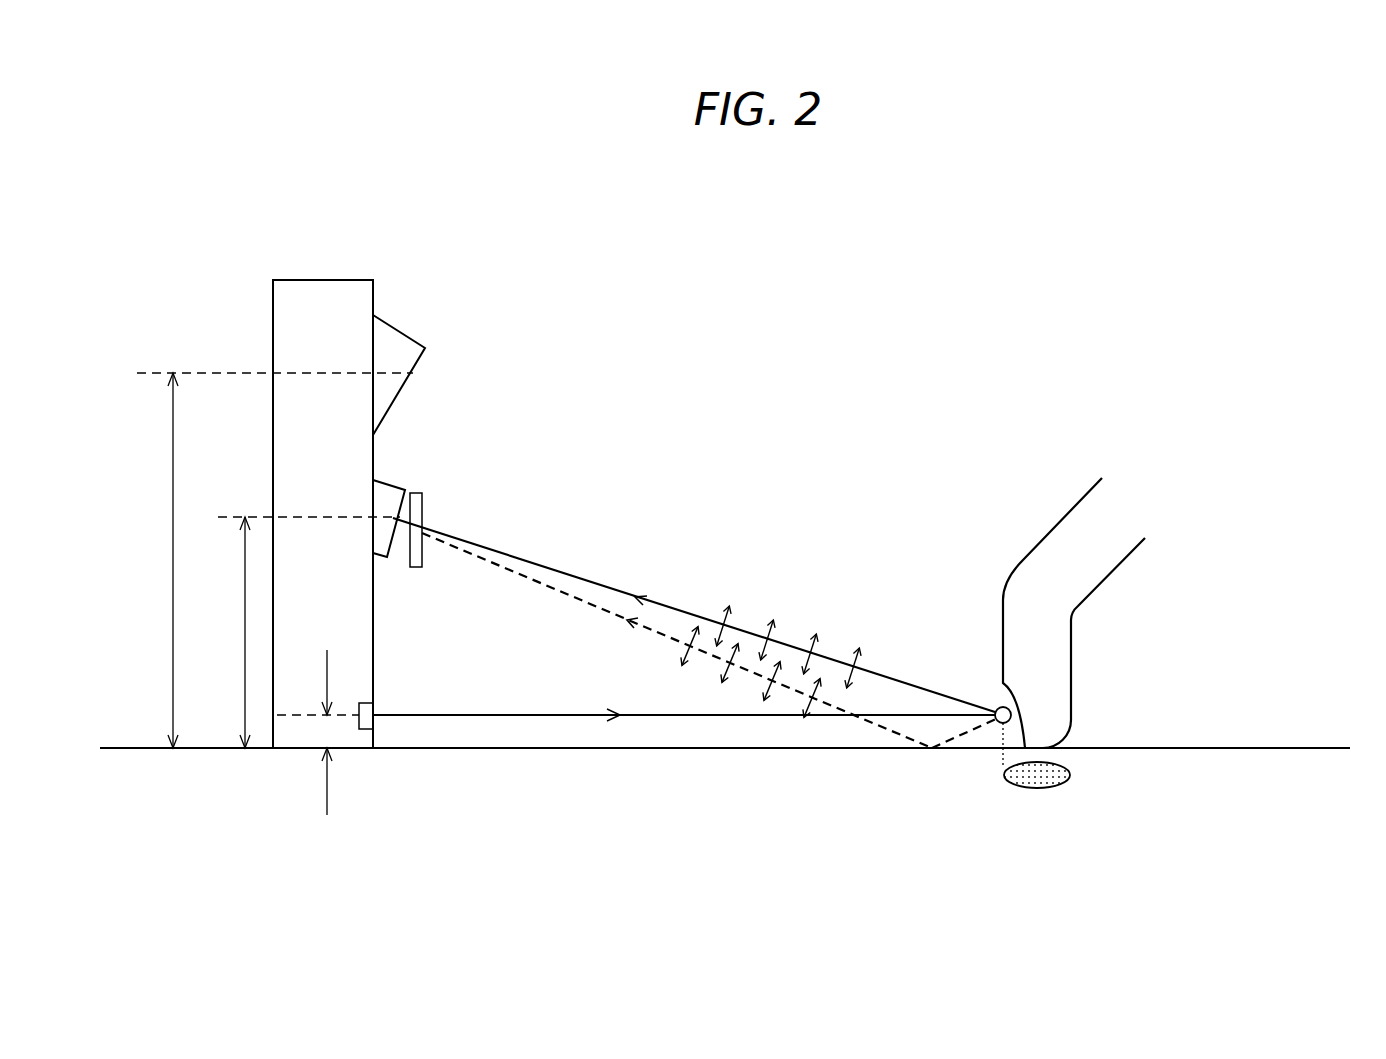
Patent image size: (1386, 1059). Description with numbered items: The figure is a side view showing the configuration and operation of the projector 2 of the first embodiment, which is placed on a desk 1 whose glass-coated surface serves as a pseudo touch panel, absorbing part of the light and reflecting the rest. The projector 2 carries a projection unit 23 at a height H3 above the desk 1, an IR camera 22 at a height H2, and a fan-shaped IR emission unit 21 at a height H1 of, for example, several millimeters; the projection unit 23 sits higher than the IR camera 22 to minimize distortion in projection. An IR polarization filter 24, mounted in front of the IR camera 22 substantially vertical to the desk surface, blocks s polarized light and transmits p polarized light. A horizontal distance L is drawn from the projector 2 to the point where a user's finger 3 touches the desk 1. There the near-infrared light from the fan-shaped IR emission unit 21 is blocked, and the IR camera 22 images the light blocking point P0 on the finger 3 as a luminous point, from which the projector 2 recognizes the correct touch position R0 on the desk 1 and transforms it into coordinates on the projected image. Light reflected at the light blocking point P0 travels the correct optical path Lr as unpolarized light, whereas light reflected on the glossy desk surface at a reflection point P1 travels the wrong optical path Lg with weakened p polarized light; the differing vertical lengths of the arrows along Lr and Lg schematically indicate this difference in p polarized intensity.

The desk 1 is at (1220, 748).
The projector 2 is at (273, 323).
The finger 3 is at (1074, 613).
The fan-shaped IR emission unit 21 is at (353, 735).
The IR camera 22 is at (404, 490).
The projection unit 23 is at (425, 348).
The IR polarization filter 24 is at (422, 508).
The light blocking point P0 is at (995, 703).
The reflection point on floor P1 is at (937, 757).
The correct touch position R0 is at (1070, 775).
The horizontal distance L is at (684, 702).
The correct optical path Lr is at (694, 615).
The wrong optical path Lg is at (709, 640).
The height of the fan-shaped IR emission unit H1 is at (318, 720).
The height of the IR camera H2 is at (301, 632).
The height of the projection unit H3 is at (274, 560).